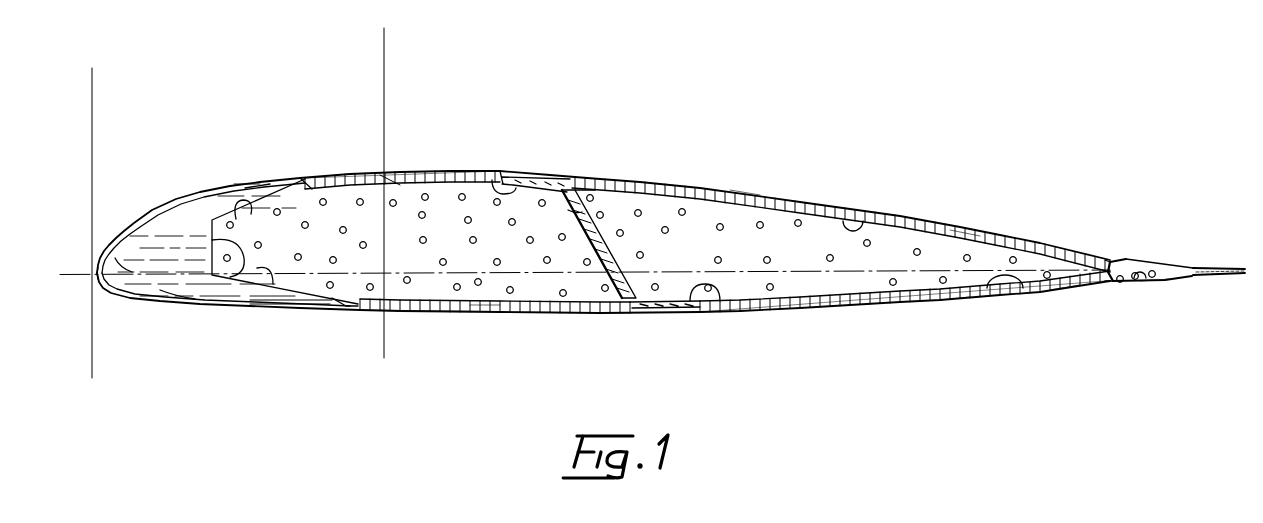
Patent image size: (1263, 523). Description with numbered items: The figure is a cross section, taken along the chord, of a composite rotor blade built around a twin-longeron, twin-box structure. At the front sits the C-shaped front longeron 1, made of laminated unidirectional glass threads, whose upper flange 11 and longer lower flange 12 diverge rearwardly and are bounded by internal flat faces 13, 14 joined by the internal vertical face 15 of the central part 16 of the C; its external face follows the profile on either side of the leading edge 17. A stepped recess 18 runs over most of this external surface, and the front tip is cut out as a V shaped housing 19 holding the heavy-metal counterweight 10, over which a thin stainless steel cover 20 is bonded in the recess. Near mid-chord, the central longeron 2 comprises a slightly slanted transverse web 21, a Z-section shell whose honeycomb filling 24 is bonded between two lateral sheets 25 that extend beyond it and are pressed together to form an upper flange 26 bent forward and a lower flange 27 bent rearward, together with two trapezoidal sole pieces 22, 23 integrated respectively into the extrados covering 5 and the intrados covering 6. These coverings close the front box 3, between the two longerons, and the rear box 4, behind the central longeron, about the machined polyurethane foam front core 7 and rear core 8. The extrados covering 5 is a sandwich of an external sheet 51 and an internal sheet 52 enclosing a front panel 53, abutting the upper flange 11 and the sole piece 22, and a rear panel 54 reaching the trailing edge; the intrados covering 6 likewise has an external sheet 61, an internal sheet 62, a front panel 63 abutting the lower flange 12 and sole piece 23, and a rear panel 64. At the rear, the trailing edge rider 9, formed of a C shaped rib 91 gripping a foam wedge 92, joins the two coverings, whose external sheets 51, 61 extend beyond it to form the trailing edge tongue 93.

The front longeron 1 is at (170, 225).
The central longeron 2 is at (514, 157).
The front box 3 is at (418, 318).
The rear box 4 is at (883, 320).
The extrados covering 5 is at (666, 183).
The intrados covering 6 is at (768, 316).
The front filling core 7 is at (538, 284).
The rear filling core 8 is at (820, 287).
The trailing edge rider 9 is at (1128, 258).
The counterweight 10 is at (108, 290).
The upper flange 11 is at (283, 190).
The lower flange 12 is at (340, 306).
The internal flat face 13 is at (243, 209).
The internal flat face 14 is at (270, 286).
The internal vertical face 15 is at (232, 274).
The central part 16 is at (155, 268).
The leading edge 17 is at (93, 270).
The stepped recess 18 is at (182, 294).
The V shaped housing 19 is at (124, 248).
The cover 20 is at (290, 305).
The transverse web 21 is at (608, 218).
The sole piece 22 is at (548, 176).
The sole piece 23 is at (652, 309).
The filling 24 is at (612, 250).
The lateral sheet 25 is at (570, 220).
The upper flange 26 is at (492, 188).
The lower flange 27 is at (708, 302).
The external sheet 51 is at (750, 197).
The internal sheet 52 is at (866, 207).
The front panel 53 is at (392, 185).
The rear panel 54 is at (965, 236).
The external sheet 61 is at (957, 300).
The internal sheet 62 is at (1002, 287).
The front panel 63 is at (490, 307).
The rear panel 64 is at (1062, 288).
The C shaped rib 91 is at (1145, 284).
The wedge 92 is at (1143, 266).
The trailing edge tongue 93 is at (1228, 277).